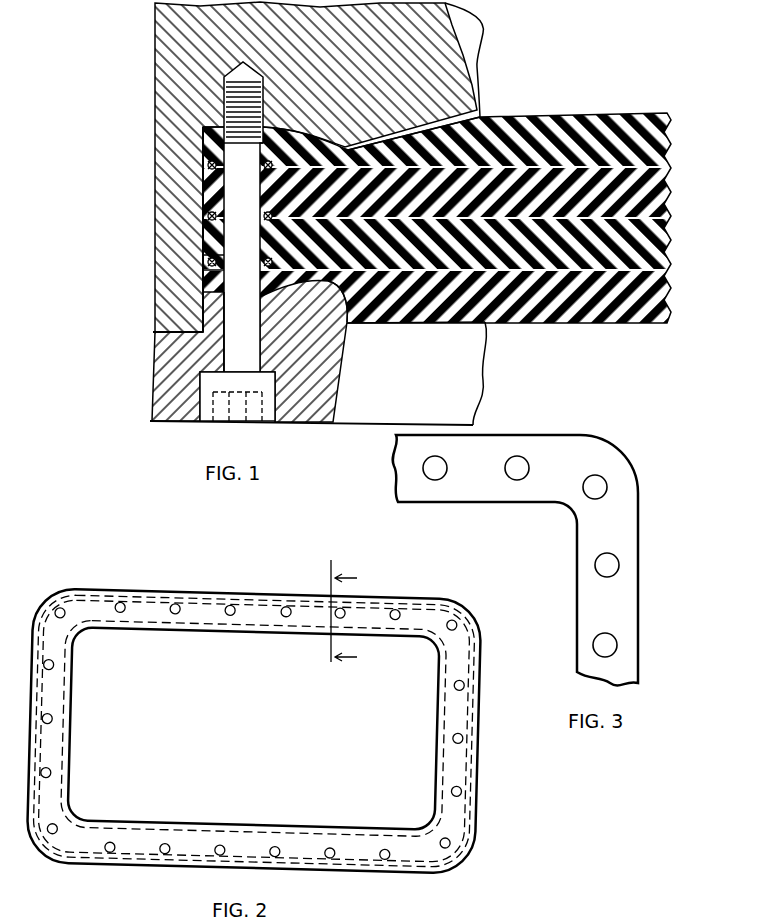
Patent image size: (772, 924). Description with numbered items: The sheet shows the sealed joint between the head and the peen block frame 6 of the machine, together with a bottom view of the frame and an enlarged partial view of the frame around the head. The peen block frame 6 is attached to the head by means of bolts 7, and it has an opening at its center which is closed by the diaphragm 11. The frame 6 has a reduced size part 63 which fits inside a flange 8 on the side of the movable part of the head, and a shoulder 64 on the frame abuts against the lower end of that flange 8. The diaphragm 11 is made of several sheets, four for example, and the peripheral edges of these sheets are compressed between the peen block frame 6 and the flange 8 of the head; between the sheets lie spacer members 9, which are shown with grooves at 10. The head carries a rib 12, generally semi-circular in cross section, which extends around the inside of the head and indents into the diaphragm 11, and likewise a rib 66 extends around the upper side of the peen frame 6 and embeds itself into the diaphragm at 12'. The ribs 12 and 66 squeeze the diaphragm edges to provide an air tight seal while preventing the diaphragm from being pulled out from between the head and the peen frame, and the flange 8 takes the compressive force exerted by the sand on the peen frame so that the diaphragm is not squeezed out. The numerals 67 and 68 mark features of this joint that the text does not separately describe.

In FIG. 1, the peen block frame 6 is at (157, 368).
In FIG. 2, the peen block frame 6 is at (201, 592).
In FIG. 1, the bolts 7 is at (268, 421).
In FIG. 2, the bolts 7 is at (116, 606).
In FIG. 1, the flange 8 is at (157, 116).
In FIG. 1, the gasket 9 is at (206, 165).
In FIG. 3, the gasket 9 is at (640, 611).
In FIG. 2, the gasket 9 is at (247, 625).
In FIG. 1, the grooves 10 is at (204, 260).
In FIG. 3, the grooves 10 is at (586, 610).
In FIG. 1, the diaphragm 11 is at (553, 325).
In FIG. 2, the diaphragm 11 is at (305, 678).
In FIG. 1, the rib 12 is at (406, 122).
In FIG. 1, the diaphragm embedding location 12' is at (416, 322).
In FIG. 1, the reduced size part 63 is at (202, 312).
In FIG. 1, the shoulder 64 is at (172, 334).
In FIG. 1, the rib 66 is at (348, 302).
In FIG. 1, the bore 67 is at (222, 345).
In FIG. 1, the bolt 68 is at (228, 80).